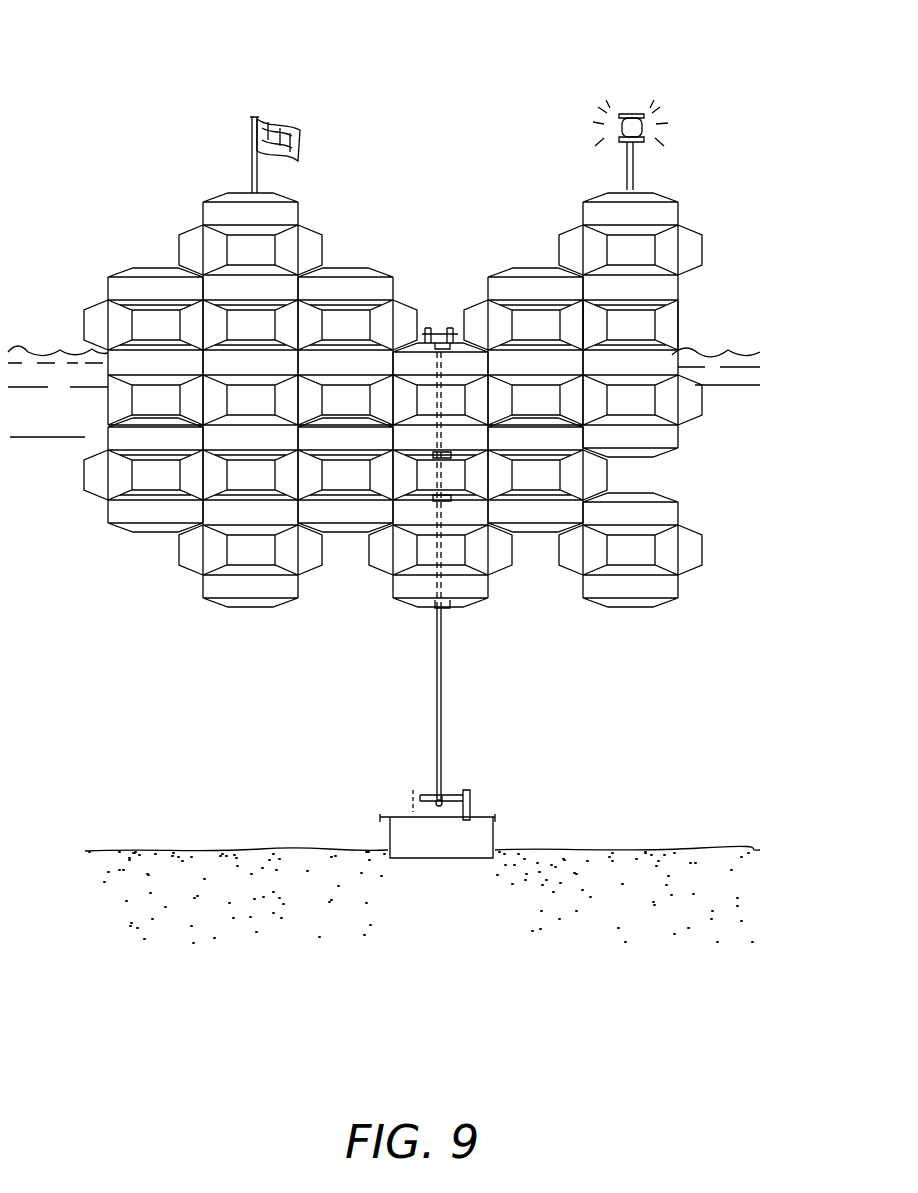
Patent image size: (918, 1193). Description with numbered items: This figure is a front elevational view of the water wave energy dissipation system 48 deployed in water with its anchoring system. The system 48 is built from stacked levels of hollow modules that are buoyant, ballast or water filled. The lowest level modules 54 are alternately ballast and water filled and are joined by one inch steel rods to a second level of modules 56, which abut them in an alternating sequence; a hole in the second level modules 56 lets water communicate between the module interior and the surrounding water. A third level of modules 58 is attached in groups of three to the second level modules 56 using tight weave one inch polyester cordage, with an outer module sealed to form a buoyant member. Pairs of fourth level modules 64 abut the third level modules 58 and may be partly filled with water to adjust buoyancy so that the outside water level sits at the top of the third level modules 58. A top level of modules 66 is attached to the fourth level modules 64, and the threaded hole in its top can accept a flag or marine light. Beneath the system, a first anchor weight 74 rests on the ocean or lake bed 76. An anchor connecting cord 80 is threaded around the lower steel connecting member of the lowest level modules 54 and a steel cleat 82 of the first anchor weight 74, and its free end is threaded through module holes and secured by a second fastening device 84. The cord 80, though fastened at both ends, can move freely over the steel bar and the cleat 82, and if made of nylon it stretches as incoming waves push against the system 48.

The system 48 is at (190, 100).
The lowest level modules 54 is at (728, 551).
The second level modules 56 is at (682, 481).
The third level modules 58 is at (722, 408).
The fourth level modules 64 is at (700, 327).
The top level modules 66 is at (722, 247).
The first anchor weight 74 is at (450, 842).
The ocean/lake bed 76 is at (640, 868).
The anchor connecting cord 80 is at (442, 687).
The steel cleat 82 is at (430, 795).
The second fastening device 84 is at (438, 332).